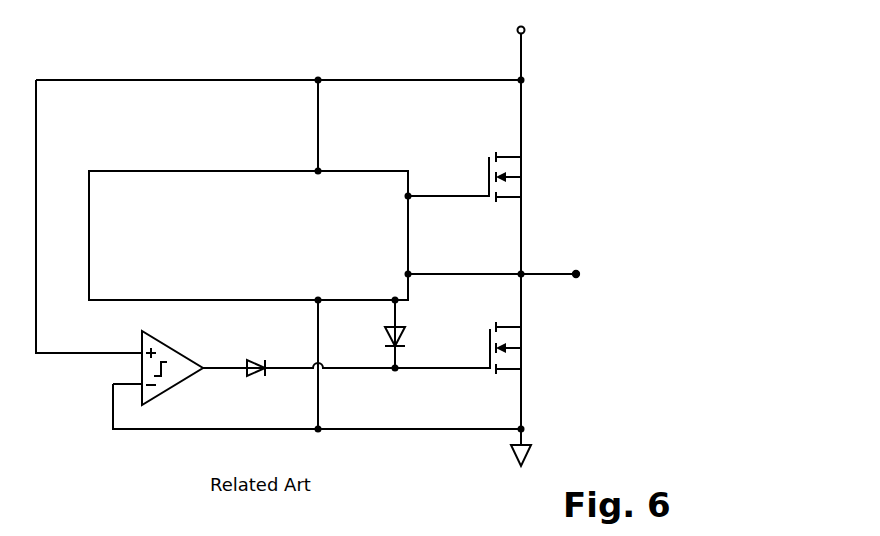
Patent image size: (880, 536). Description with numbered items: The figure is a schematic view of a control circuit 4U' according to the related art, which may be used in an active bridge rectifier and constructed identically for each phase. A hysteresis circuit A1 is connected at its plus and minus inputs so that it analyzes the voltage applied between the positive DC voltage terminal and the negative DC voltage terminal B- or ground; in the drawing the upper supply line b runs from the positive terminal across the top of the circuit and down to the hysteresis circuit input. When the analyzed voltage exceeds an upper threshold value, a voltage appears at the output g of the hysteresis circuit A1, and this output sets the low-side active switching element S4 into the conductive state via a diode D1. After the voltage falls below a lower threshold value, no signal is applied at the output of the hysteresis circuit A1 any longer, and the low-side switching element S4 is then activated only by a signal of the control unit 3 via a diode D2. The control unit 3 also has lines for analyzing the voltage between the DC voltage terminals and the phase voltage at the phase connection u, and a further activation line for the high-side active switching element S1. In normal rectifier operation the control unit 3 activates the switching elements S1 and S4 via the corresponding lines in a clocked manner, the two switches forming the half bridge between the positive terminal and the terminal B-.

The supply wire b is at (175, 80).
The control unit 3 is at (175, 171).
The control circuit 4U' is at (419, 225).
The active switching element S1 is at (546, 172).
The output terminal u is at (505, 276).
The low-side switch S4 is at (546, 342).
The diode D2 is at (405, 336).
The diode D1 is at (262, 358).
The hysteresis circuit A1 is at (176, 347).
The gate signal line g is at (217, 370).
The DC voltage terminal B- is at (538, 450).